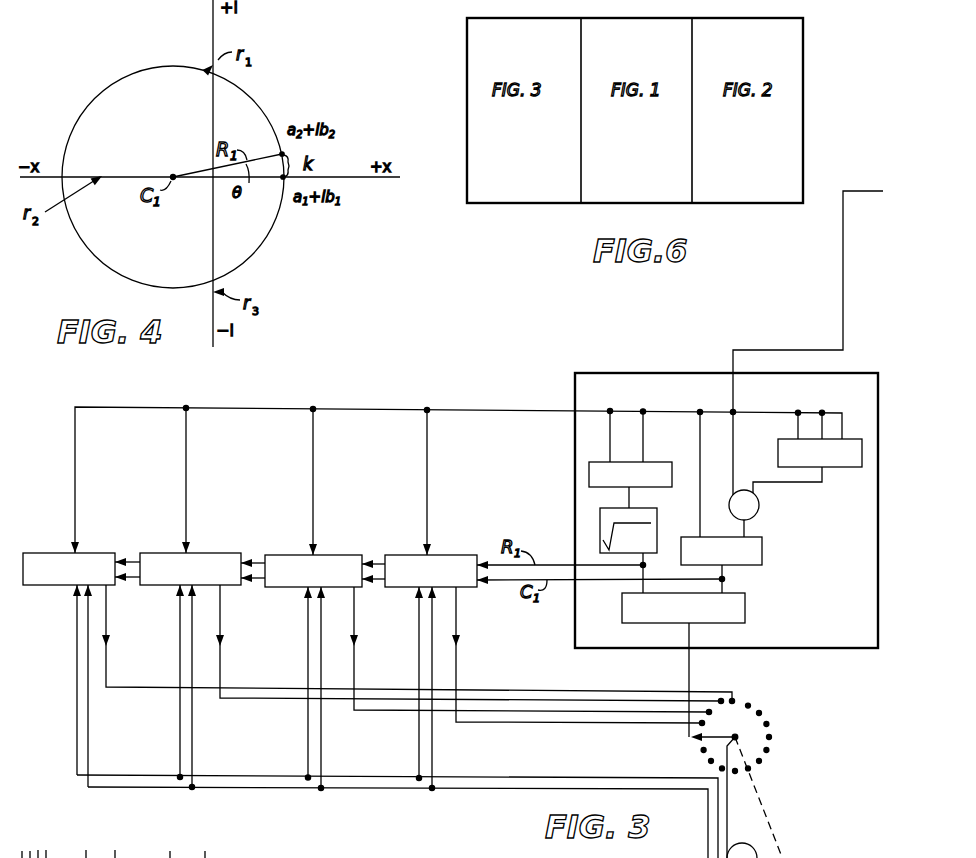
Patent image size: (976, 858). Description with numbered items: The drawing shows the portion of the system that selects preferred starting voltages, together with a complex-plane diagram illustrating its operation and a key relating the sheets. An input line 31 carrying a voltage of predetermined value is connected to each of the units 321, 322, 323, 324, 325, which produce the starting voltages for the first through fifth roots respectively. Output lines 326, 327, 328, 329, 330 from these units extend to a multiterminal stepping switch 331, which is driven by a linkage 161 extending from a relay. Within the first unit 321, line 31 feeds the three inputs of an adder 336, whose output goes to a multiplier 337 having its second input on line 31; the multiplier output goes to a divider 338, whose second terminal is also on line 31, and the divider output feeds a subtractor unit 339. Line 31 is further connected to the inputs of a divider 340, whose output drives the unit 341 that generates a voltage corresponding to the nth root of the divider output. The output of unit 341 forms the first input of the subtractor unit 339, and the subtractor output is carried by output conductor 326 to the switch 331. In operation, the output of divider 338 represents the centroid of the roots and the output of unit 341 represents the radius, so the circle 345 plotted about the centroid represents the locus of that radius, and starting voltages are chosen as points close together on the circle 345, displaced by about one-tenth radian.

In FIG. 3, the line 31 is at (843, 286).
In FIG. 3, the linkage 161 is at (779, 853).
In FIG. 3, the unit 321 is at (860, 650).
In FIG. 3, the unit 322 is at (431, 571).
In FIG. 3, the unit 323 is at (313, 571).
In FIG. 3, the unit 324 is at (190, 569).
In FIG. 3, the unit 325 is at (69, 569).
In FIG. 3, the output conductor 326 is at (688, 675).
In FIG. 3, the output line 327 is at (456, 676).
In FIG. 3, the output line 328 is at (354, 676).
In FIG. 3, the output line 329 is at (220, 676).
In FIG. 3, the output line 330 is at (106, 676).
In FIG. 3, the multiterminal stepping switch 331 is at (736, 780).
In FIG. 3, the adder 336 is at (860, 468).
In FIG. 3, the multiplier 337 is at (760, 512).
In FIG. 3, the divider 338 is at (762, 551).
In FIG. 3, the subtractor unit 339 is at (745, 607).
In FIG. 3, the divider 340 is at (663, 463).
In FIG. 3, the unit 341 is at (657, 523).
In FIG. 4, the circle 345 is at (262, 243).